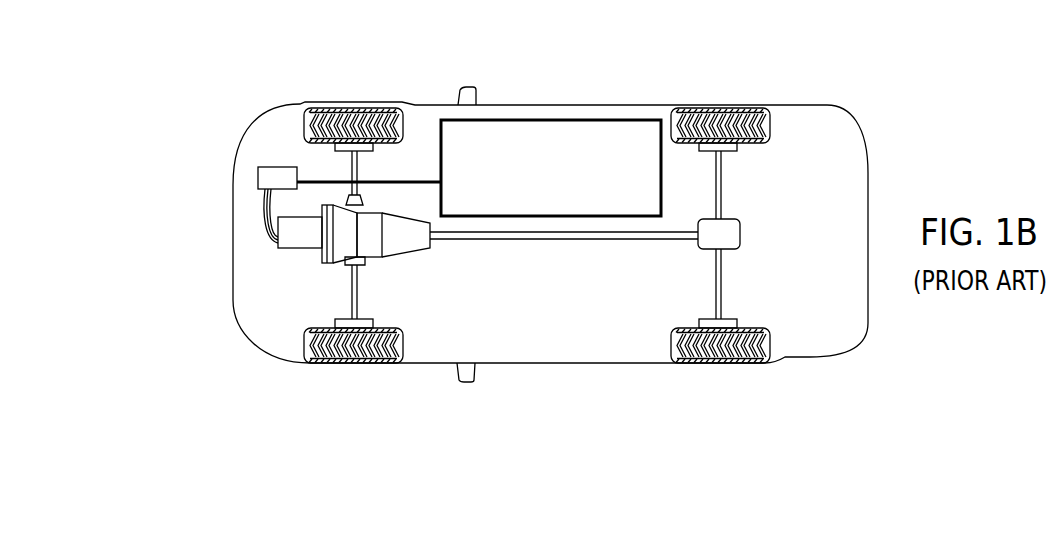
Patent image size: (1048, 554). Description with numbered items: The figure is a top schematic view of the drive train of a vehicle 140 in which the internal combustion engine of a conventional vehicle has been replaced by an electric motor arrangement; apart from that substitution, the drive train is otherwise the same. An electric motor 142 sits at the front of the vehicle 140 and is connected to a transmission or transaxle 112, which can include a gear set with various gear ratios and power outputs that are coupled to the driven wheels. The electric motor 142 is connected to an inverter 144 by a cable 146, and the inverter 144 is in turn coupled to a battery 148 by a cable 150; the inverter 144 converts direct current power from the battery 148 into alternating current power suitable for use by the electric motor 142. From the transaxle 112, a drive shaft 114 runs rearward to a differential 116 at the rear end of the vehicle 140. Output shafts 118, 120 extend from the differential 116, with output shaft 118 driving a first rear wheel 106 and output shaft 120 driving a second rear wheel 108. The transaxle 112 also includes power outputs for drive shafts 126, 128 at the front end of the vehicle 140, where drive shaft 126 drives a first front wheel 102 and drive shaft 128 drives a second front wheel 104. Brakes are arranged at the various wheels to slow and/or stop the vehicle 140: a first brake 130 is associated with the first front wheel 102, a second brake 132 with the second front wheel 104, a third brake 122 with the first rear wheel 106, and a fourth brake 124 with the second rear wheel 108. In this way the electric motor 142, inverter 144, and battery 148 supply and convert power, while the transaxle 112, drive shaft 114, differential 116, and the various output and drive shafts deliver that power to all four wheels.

The vehicle 140 is at (180, 68).
The cable 150 is at (418, 122).
The battery 148 is at (525, 120).
The first front wheel 102 is at (334, 108).
The second front wheel 104 is at (351, 363).
The first rear wheel 106 is at (720, 108).
The second rear wheel 108 is at (715, 363).
The first brake 130 is at (343, 150).
The drive shaft 126 is at (357, 166).
The drive shaft 128 is at (360, 292).
The second brake 132 is at (373, 324).
The inverter 144 is at (258, 177).
The cable 146 is at (257, 212).
The electric motor 142 is at (287, 243).
The transaxle 112 is at (407, 243).
The drive shaft 114 is at (570, 240).
The differential 116 is at (740, 232).
The third brake 122 is at (728, 150).
The output shaft 118 is at (721, 185).
The output shaft 120 is at (722, 284).
The fourth brake 124 is at (737, 322).